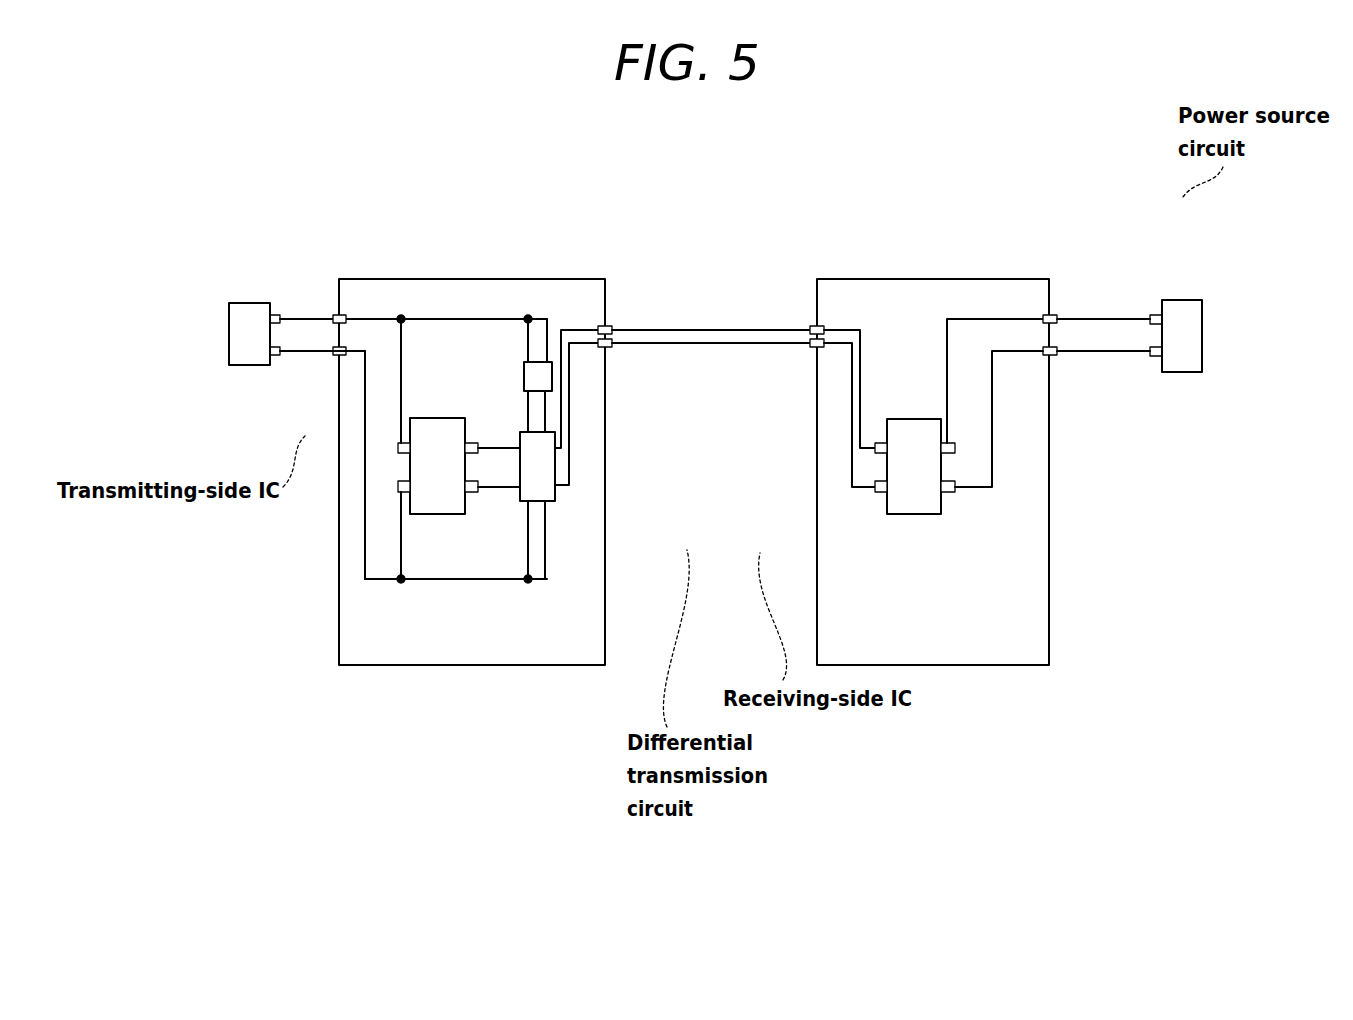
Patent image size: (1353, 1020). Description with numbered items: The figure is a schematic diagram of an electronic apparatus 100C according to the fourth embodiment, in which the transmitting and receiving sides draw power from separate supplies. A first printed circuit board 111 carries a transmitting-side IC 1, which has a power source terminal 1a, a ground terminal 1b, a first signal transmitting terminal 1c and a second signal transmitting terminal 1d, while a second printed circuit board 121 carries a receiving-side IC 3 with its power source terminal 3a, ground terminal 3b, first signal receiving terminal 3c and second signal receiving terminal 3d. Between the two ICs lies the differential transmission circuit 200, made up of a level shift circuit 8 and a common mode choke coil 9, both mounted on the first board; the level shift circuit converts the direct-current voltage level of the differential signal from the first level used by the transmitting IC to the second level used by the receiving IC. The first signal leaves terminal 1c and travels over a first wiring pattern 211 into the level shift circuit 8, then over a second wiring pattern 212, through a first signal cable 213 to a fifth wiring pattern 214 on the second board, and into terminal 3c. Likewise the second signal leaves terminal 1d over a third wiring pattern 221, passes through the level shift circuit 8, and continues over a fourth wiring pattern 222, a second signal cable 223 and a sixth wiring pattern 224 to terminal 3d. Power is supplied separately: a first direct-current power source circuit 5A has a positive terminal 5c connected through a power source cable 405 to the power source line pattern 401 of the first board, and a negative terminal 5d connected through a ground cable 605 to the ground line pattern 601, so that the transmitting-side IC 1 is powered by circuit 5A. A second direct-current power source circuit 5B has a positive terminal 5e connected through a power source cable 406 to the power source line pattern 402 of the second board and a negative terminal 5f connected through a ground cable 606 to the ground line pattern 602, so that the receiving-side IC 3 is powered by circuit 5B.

The electronic apparatus 100C is at (858, 150).
The first printed circuit board 111 is at (531, 279).
The second printed circuit board 121 is at (868, 279).
The first direct-current power source circuit 5A is at (252, 303).
The second direct-current power source circuit 5B is at (1175, 300).
The positive terminal 5c is at (281, 315).
The negative terminal 5d is at (271, 365).
The positive terminal 5e is at (1152, 315).
The negative terminal 5f is at (1155, 357).
The power source line pattern 401 is at (384, 317).
The power source line pattern 402 is at (1048, 315).
The power source cable 405 is at (338, 315).
The power source cable 406 is at (1110, 318).
The ground line pattern 601 is at (437, 579).
The ground line pattern 602 is at (992, 403).
The ground cable 605 is at (300, 351).
The ground cable 606 is at (1110, 352).
The transmitting-side IC 1 is at (408, 420).
The power source terminal 1a is at (398, 448).
The ground terminal 1b is at (398, 487).
The first signal transmitting terminal 1c is at (472, 440).
The second signal transmitting terminal 1d is at (470, 493).
The receiving-side IC 3 is at (913, 514).
The power source terminal 3a is at (955, 448).
The ground terminal 3b is at (955, 489).
The first signal receiving terminal 3c is at (875, 448).
The second signal receiving terminal 3d is at (875, 488).
The level shift circuit 8 is at (557, 501).
The common mode choke coil 9 is at (524, 368).
The differential transmission circuit 200 is at (578, 477).
The first wiring pattern 211 is at (503, 448).
The second wiring pattern 212 is at (561, 403).
The first signal cable 213 is at (670, 330).
The fifth wiring pattern 214 is at (860, 375).
The third wiring pattern 221 is at (503, 487).
The fourth wiring pattern 222 is at (569, 443).
The second signal cable 223 is at (733, 343).
The sixth wiring pattern 224 is at (852, 410).